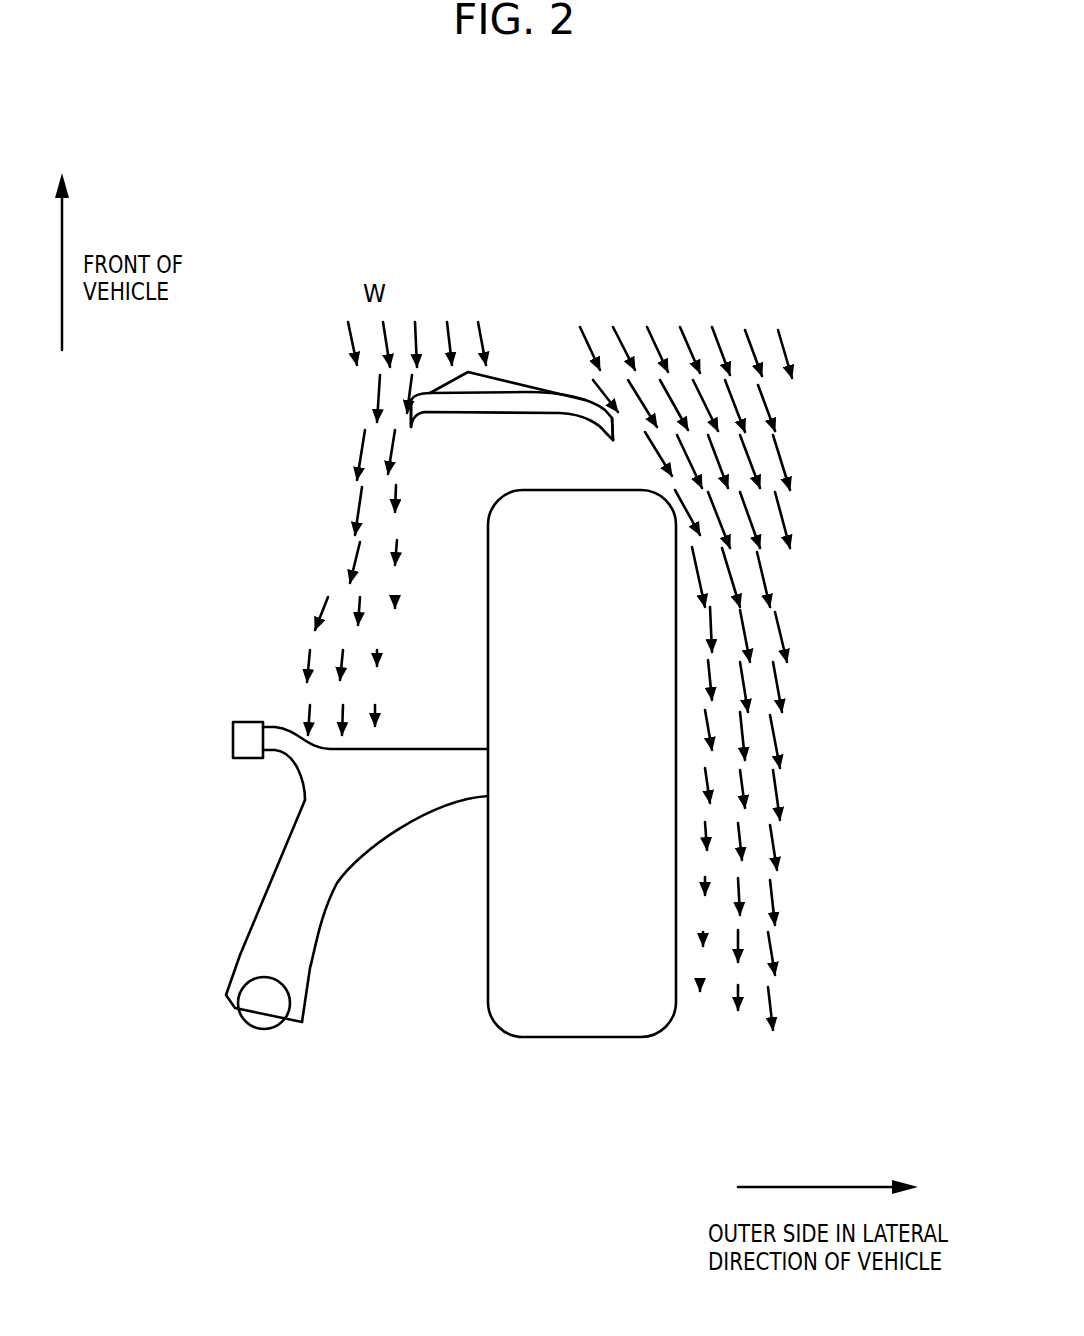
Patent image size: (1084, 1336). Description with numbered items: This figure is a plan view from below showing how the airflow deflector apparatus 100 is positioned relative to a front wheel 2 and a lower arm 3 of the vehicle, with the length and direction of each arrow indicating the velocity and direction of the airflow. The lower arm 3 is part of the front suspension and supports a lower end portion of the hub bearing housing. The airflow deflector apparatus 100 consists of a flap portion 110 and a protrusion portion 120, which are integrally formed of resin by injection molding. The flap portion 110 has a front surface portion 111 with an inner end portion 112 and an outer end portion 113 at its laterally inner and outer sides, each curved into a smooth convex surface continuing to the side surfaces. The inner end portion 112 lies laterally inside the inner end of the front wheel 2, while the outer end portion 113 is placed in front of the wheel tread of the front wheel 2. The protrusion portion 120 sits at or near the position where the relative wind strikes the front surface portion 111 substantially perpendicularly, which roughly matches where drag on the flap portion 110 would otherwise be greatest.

The front wheel 2 is at (595, 1040).
The lower arm 3 is at (305, 800).
The airflow deflector apparatus 100 is at (570, 376).
The flap portion 110 is at (443, 430).
The front surface portion 111 is at (527, 392).
The inner end portion 112 is at (411, 408).
The outer end portion 113 is at (611, 418).
The protrusion portion 120 is at (468, 372).